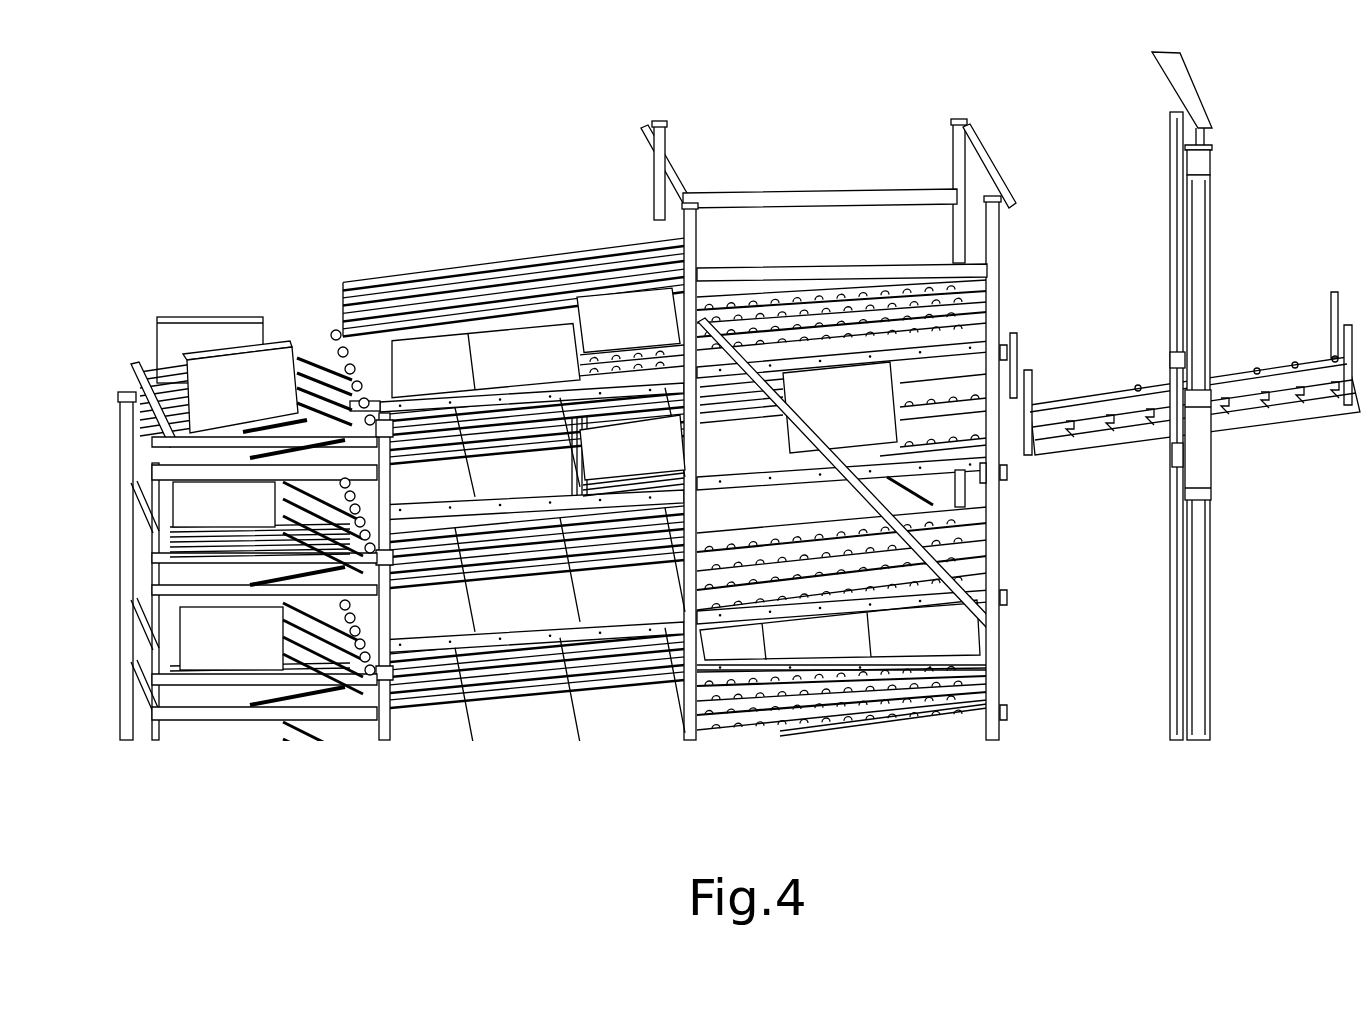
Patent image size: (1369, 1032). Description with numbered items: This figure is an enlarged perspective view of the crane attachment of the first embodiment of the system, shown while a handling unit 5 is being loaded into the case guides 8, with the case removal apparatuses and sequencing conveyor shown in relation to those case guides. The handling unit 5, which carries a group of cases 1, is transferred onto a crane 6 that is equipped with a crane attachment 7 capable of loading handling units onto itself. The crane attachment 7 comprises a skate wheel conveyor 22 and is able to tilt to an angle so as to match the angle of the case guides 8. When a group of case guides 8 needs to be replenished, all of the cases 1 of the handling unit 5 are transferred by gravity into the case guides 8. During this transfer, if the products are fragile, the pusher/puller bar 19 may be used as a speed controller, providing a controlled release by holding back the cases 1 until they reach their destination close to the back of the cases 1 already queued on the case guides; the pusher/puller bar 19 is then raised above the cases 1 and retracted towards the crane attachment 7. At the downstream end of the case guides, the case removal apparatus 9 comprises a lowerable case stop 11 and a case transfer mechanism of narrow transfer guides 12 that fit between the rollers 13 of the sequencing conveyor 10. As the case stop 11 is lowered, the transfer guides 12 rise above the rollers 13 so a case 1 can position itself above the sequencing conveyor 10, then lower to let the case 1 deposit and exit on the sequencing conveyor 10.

The case 1 is at (602, 317).
The handling unit 5 is at (890, 367).
The crane 6 is at (1227, 192).
The crane attachment 7 is at (1097, 457).
The case guide 8 is at (905, 400).
The case removal apparatus 9 is at (237, 695).
The sequencing conveyor 10 is at (142, 357).
The case stop 11 is at (341, 327).
The transfer guides 12 is at (272, 690).
The rollers 13 is at (317, 680).
The pusher/puller bar 19 is at (583, 465).
The skate wheel conveyor 22 is at (1242, 395).